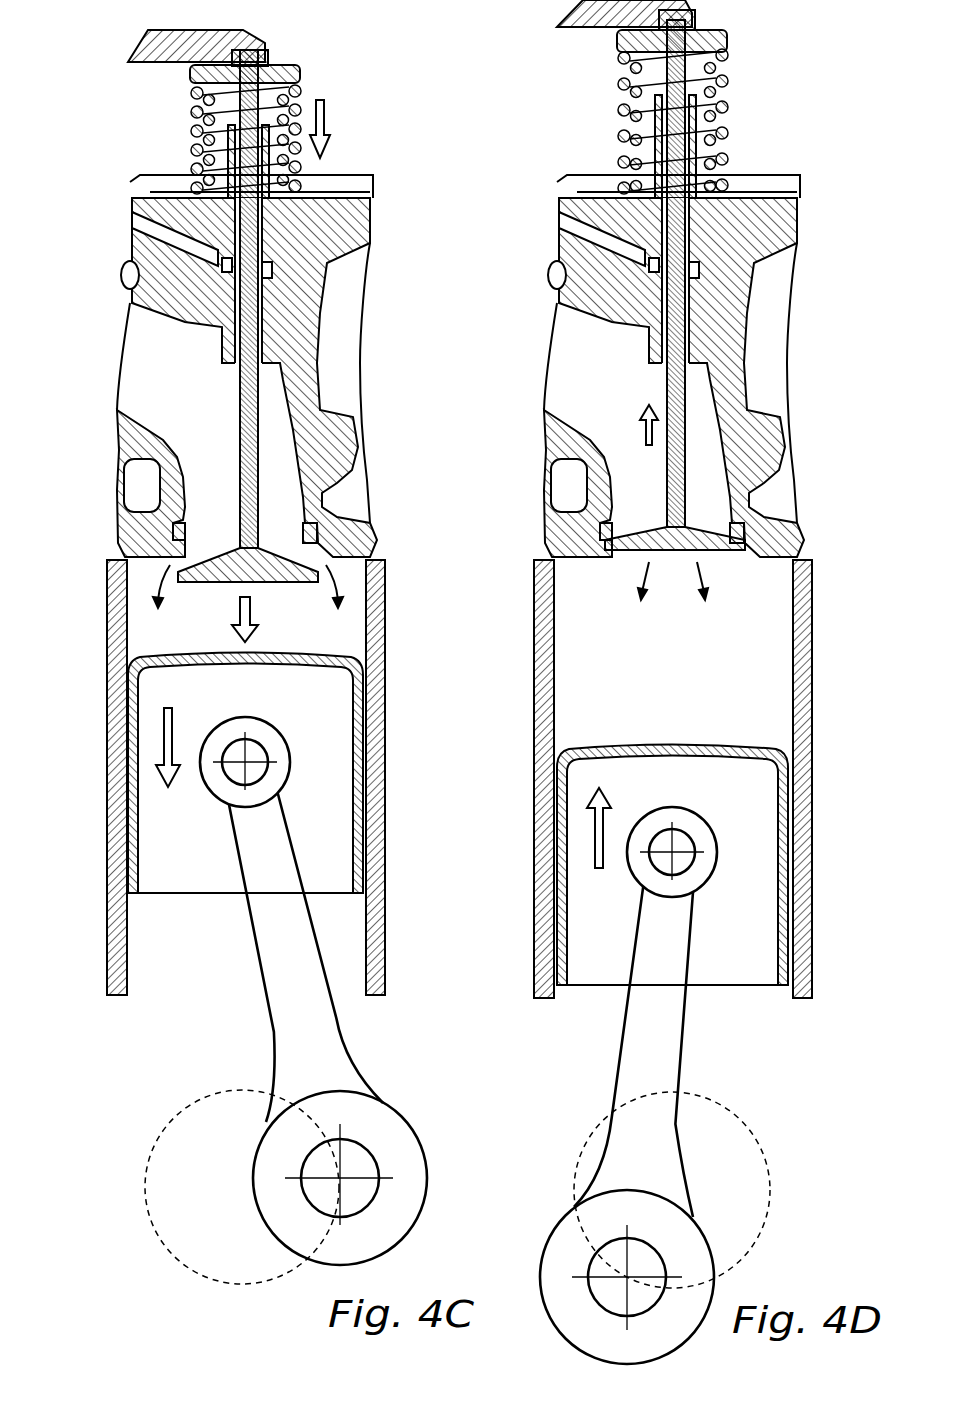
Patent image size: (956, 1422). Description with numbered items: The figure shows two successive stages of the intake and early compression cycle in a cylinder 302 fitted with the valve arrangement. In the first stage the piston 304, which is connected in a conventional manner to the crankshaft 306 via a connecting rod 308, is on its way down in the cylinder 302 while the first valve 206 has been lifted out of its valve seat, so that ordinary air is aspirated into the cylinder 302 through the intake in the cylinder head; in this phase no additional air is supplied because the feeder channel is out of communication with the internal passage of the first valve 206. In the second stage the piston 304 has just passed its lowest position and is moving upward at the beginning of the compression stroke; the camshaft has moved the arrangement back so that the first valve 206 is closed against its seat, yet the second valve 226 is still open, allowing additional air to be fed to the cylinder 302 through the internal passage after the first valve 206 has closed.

In FIG. 4C, the second valve 226 is at (238, 427).
In FIG. 4D, the second valve 226 is at (664, 388).
In FIG. 4C, the first valve 206 is at (280, 518).
In FIG. 4D, the first valve 206 is at (720, 518).
In FIG. 4C, the cylinder 302 is at (133, 946).
In FIG. 4D, the cylinder 302 is at (566, 720).
In FIG. 4C, the piston 304 is at (325, 776).
In FIG. 4D, the piston 304 is at (760, 862).
In FIG. 4C, the crankshaft 306 is at (146, 1171).
In FIG. 4D, the crankshaft 306 is at (582, 1155).
In FIG. 4C, the connecting rod 308 is at (314, 1036).
In FIG. 4D, the connecting rod 308 is at (662, 1050).